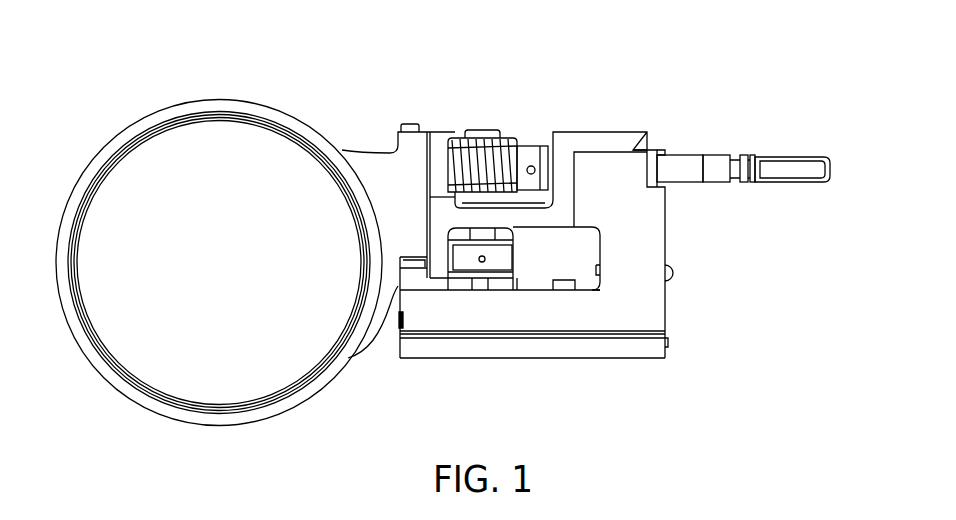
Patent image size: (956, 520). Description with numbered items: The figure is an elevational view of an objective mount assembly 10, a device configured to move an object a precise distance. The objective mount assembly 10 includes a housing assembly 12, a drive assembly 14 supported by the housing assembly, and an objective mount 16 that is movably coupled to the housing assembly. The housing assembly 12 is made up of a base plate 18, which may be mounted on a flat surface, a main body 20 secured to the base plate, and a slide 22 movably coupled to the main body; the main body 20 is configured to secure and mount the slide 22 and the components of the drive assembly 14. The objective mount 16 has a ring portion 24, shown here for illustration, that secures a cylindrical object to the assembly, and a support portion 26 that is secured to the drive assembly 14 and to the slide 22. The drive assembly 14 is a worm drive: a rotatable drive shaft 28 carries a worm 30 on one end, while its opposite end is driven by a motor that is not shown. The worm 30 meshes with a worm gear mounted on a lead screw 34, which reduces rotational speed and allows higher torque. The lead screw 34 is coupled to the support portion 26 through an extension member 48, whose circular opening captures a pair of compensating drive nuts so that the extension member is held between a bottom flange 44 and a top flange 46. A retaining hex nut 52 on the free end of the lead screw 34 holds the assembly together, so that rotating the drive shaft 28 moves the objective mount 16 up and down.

The objective mount assembly 10 is at (160, 74).
The housing assembly 12 is at (671, 364).
The drive assembly 14 is at (510, 110).
The objective mount 16 is at (102, 373).
The base plate 18 is at (430, 352).
The main body 20 is at (612, 240).
The slide 22 is at (607, 132).
The ring portion 24 is at (105, 160).
The support portion 26 is at (402, 162).
The drive shaft 28 is at (717, 162).
The worm 30 is at (456, 137).
The lead screw 34 is at (483, 131).
The bottom flange 44 is at (490, 273).
The top flange 46 is at (502, 240).
The extension member 48 is at (453, 262).
The retaining hex nut 52 is at (464, 134).